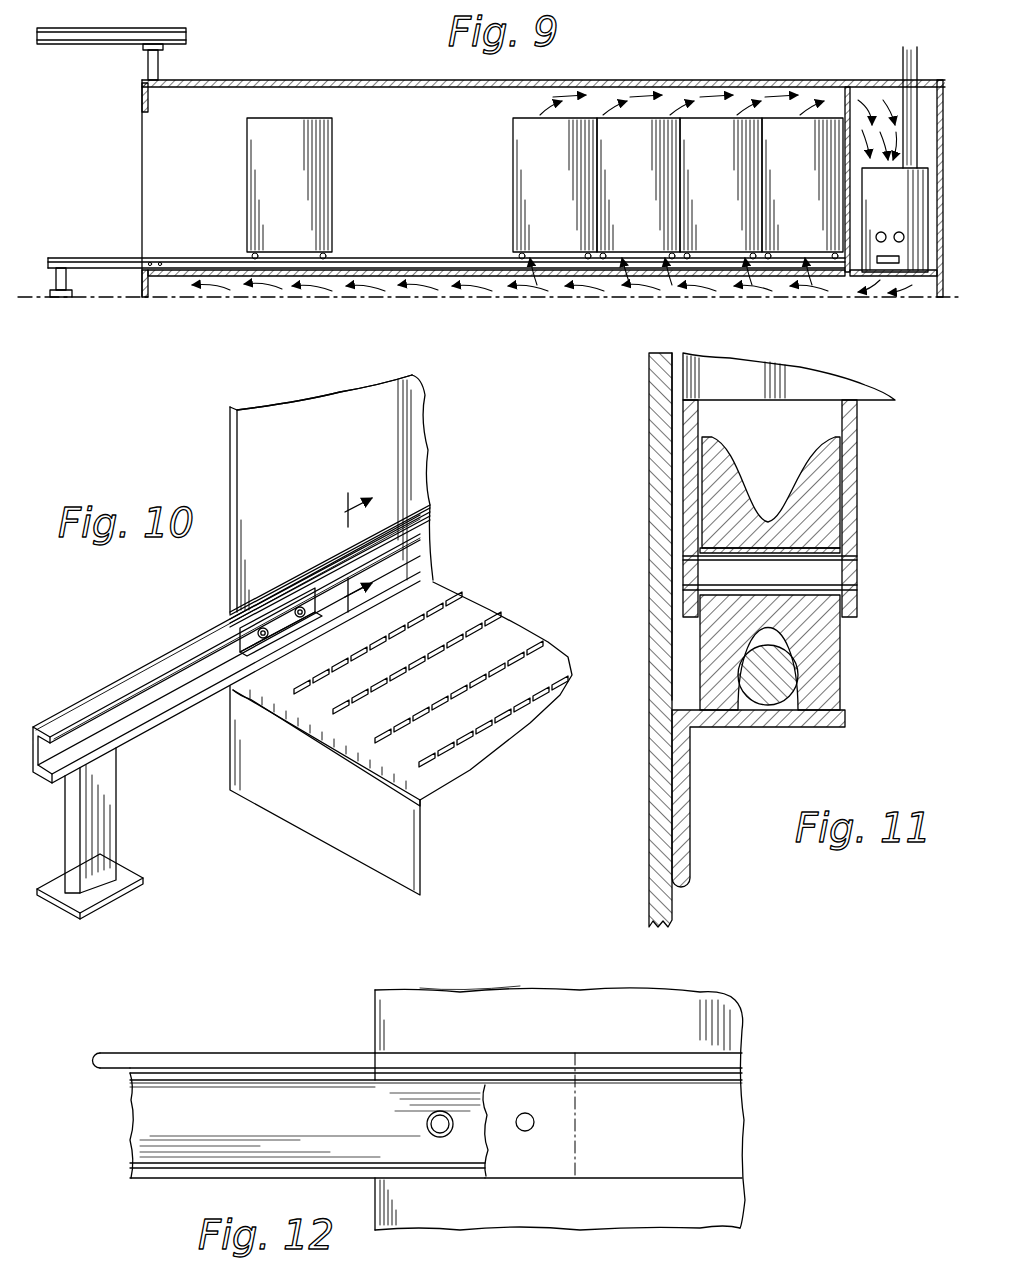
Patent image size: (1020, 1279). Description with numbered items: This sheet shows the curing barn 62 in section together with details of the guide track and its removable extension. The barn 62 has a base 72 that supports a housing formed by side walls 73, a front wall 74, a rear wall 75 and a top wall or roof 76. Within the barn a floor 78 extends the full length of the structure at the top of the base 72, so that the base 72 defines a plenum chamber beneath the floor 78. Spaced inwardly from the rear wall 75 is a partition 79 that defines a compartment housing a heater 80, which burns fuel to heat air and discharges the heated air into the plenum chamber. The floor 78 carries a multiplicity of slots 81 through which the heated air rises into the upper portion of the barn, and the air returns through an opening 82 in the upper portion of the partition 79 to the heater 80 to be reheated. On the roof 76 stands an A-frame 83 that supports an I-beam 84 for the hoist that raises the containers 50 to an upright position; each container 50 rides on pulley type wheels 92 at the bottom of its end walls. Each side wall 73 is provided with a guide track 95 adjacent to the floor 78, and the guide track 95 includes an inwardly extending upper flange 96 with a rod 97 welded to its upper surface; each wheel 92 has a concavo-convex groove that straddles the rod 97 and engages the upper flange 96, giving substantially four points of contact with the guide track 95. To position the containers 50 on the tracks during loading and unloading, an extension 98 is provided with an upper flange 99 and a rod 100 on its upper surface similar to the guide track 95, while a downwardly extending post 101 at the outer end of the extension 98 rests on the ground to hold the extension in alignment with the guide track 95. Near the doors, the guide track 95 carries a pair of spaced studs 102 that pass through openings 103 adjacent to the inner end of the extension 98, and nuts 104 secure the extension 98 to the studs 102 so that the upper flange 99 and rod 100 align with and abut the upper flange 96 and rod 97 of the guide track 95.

In FIG. 9, the container 50 is at (343, 169).
In FIG. 11, the container 50 is at (790, 363).
In FIG. 9, the barn 62 is at (358, 78).
In FIG. 10, the barn 62 is at (228, 434).
In FIG. 11, the barn 62 is at (647, 477).
In FIG. 12, the barn 62 is at (516, 950).
In FIG. 9, the base 72 is at (146, 278).
In FIG. 10, the base 72 is at (346, 855).
In FIG. 9, the side walls 73 is at (438, 105).
In FIG. 10, the side walls 73 is at (318, 405).
In FIG. 11, the side walls 73 is at (650, 560).
In FIG. 12, the side walls 73 is at (608, 1005).
In FIG. 9, the front wall 74 is at (141, 98).
In FIG. 9, the rear wall 75 is at (945, 80).
In FIG. 9, the top wall or roof 76 is at (692, 80).
In FIG. 9, the floor 78 is at (426, 285).
In FIG. 10, the floor 78 is at (404, 684).
In FIG. 9, the partition 79 is at (858, 120).
In FIG. 9, the heater 80 is at (878, 200).
In FIG. 10, the slots 81 is at (453, 604).
In FIG. 9, the opening 82 is at (846, 93).
In FIG. 9, the A-frame 83 is at (147, 66).
In FIG. 9, the I-beam 84 is at (102, 29).
In FIG. 11, the pulley type wheels 92 is at (831, 640).
In FIG. 9, the guide track 95 is at (383, 257).
In FIG. 10, the guide track 95 is at (412, 503).
In FIG. 11, the guide track 95 is at (695, 821).
In FIG. 12, the guide track 95 is at (640, 1051).
In FIG. 10, the upper flange 96 is at (286, 593).
In FIG. 11, the upper flange 96 is at (816, 728).
In FIG. 12, the upper flange 96 is at (723, 1084).
In FIG. 10, the rod 97 is at (322, 572).
In FIG. 11, the rod 97 is at (791, 670).
In FIG. 12, the rod 97 is at (724, 1058).
In FIG. 9, the extension 98 is at (125, 230).
In FIG. 10, the extension 98 is at (226, 651).
In FIG. 12, the extension 98 is at (282, 1149).
In FIG. 10, the upper flange 99 is at (119, 688).
In FIG. 12, the upper flange 99 is at (149, 1083).
In FIG. 10, the rod 100 is at (196, 652).
In FIG. 12, the rod 100 is at (238, 1038).
In FIG. 9, the post 101 is at (52, 283).
In FIG. 10, the post 101 is at (107, 828).
In FIG. 12, the studs 102 is at (525, 1132).
In FIG. 12, the openings 103 is at (427, 1124).
In FIG. 10, the nuts 104 is at (258, 626).